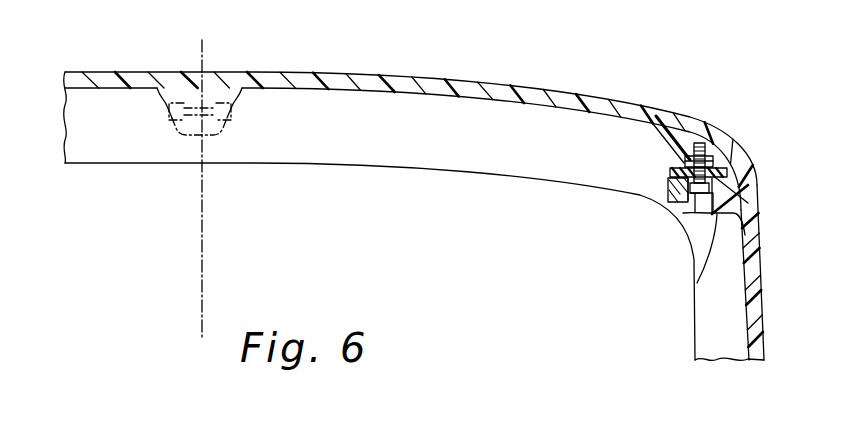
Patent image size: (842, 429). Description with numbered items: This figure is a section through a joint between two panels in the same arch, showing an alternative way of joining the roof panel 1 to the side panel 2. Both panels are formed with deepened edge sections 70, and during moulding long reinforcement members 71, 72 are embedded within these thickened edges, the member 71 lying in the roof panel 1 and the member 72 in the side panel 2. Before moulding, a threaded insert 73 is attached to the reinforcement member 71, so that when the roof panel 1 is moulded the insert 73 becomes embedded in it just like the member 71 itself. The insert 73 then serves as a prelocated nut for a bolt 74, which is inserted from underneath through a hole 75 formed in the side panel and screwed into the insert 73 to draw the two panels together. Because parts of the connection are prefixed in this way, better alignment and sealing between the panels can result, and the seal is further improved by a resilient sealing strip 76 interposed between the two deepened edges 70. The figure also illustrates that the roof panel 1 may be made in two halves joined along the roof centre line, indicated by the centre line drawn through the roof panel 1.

The roof panel 1 is at (768, 292).
The side panel 2 is at (364, 50).
The deepened edge section 70 is at (748, 131).
The reinforcement member 71 is at (676, 120).
The reinforcement member 72 is at (697, 280).
The threaded insert 73 is at (712, 141).
The bolt 74 is at (688, 206).
The hole 75 is at (698, 217).
The resilient sealing strip 76 is at (668, 171).